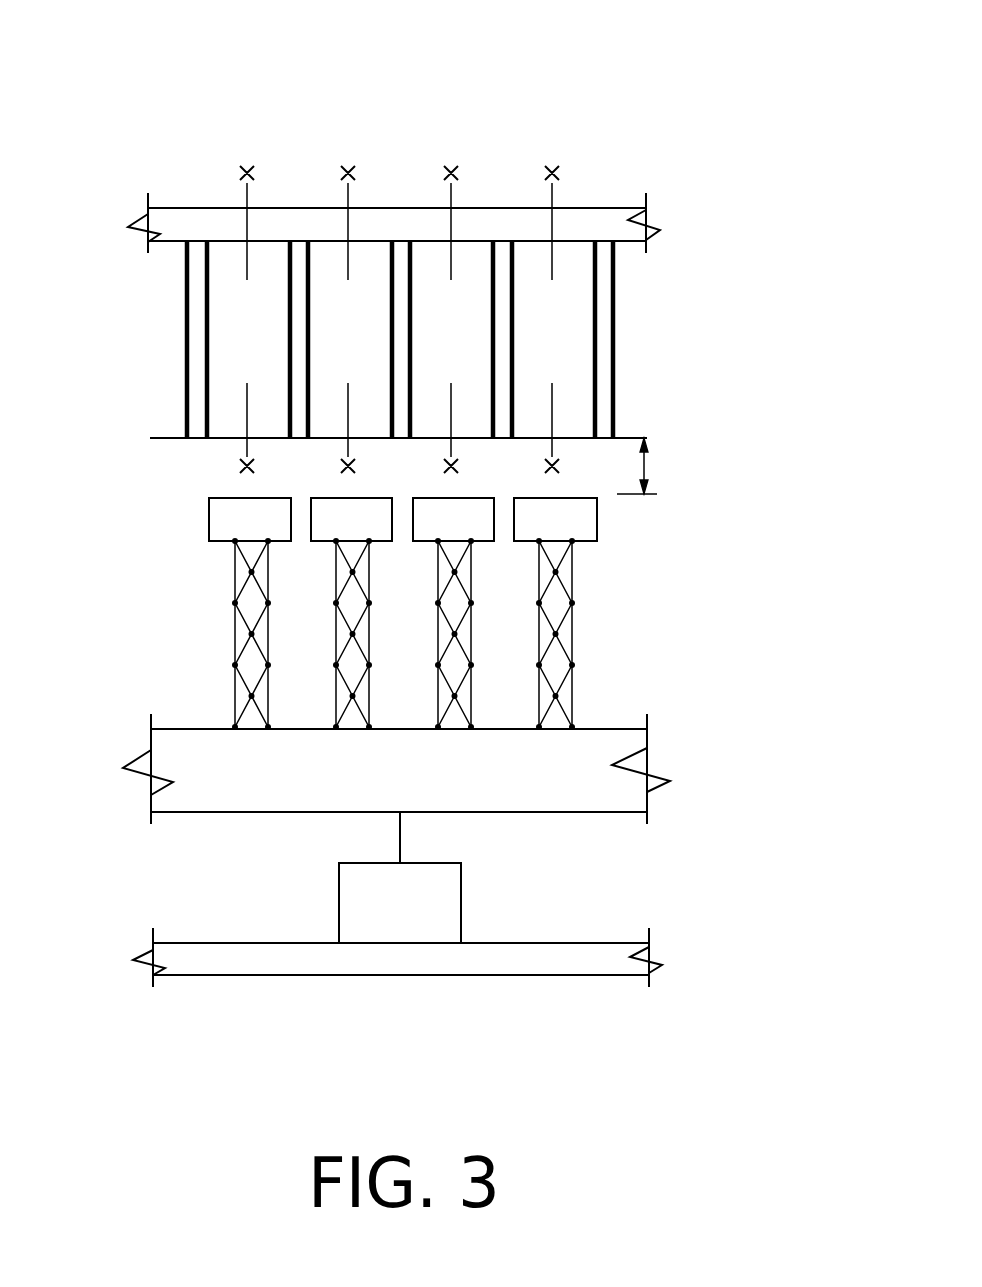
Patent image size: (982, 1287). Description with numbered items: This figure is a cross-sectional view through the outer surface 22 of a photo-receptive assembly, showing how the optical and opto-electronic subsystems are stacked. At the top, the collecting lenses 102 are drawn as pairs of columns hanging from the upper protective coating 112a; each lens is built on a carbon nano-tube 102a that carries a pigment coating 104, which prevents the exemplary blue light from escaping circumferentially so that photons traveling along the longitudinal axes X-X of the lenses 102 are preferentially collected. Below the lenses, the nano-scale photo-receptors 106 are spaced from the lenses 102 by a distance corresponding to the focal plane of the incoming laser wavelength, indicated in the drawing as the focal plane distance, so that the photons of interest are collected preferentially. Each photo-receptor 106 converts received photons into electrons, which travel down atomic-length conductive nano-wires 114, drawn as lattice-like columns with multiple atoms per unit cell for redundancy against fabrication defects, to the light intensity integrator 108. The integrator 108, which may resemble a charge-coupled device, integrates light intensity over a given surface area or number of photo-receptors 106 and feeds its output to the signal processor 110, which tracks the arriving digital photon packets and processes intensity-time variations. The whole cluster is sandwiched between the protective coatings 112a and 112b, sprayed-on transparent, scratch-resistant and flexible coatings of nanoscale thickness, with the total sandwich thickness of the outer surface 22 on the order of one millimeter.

The outer surface 22 is at (425, 541).
The collecting lenses 102 is at (464, 258).
The carbon nano-tube 102a is at (288, 317).
The pigment coating 104 is at (198, 440).
The nano-scale photo-receptors 106 is at (210, 520).
The light intensity integrator 108 is at (293, 790).
The signal processor 110 is at (433, 925).
The protective coating 112a is at (504, 208).
The protective coating 112b is at (310, 975).
The conductive nano-wires 114 is at (235, 645).